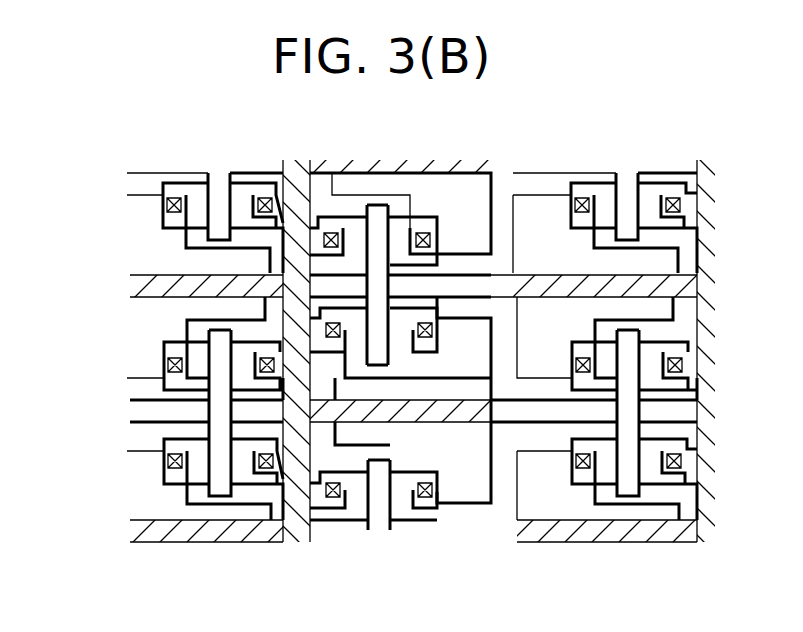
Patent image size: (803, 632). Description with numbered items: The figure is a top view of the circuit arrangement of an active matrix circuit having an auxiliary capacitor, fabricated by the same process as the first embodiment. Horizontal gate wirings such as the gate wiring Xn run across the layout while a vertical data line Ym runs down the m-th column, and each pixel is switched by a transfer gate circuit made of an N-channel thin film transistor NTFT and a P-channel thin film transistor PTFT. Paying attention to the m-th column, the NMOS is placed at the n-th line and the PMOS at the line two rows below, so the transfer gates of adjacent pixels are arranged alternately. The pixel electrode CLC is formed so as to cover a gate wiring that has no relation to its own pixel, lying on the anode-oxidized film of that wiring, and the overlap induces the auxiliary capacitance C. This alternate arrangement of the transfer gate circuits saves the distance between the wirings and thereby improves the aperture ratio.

The gate wiring Xn is at (140, 289).
The data line Ym is at (292, 545).
The N-channel thin film transistor NTFT is at (378, 340).
The P-channel thin film transistor PTFT is at (380, 489).
The auxiliary capacitance C is at (493, 432).
The pixel electrode CLC is at (466, 490).